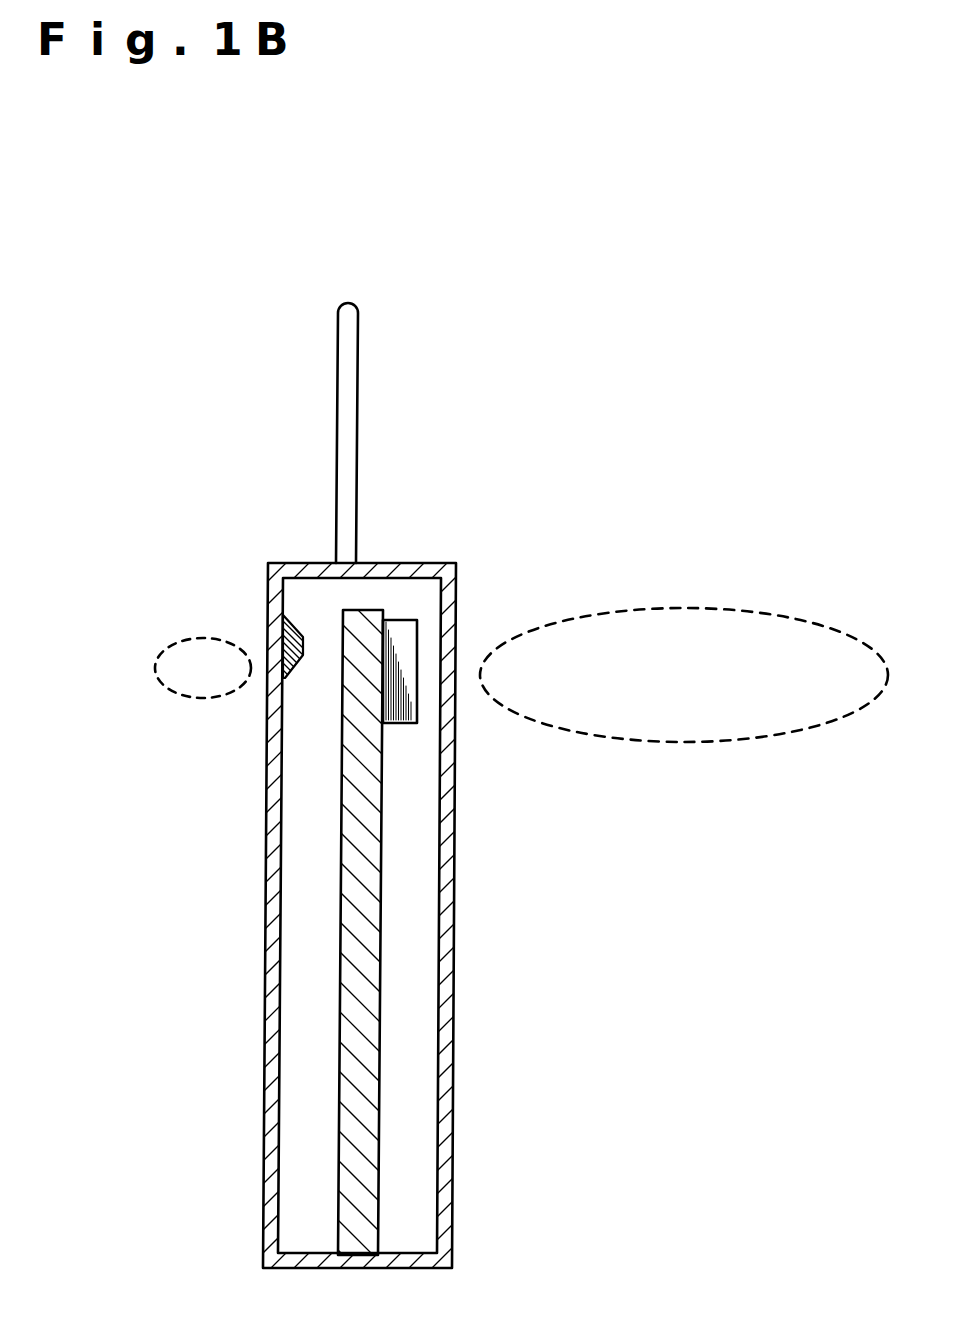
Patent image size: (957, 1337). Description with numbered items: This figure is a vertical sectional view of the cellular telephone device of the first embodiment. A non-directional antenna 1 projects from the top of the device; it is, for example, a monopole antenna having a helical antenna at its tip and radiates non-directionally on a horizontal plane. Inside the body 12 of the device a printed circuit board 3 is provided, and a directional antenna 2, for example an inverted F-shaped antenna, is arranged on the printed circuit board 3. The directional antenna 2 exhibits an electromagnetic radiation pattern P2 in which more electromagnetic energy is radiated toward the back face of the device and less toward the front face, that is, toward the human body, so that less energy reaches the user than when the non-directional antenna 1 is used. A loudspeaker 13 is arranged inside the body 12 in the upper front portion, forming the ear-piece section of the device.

The non-directional antenna 1 is at (357, 453).
The directional antenna 2 is at (400, 727).
The printed circuit board 3 is at (342, 777).
The body 12 is at (267, 797).
The loudspeaker 13 is at (292, 680).
The electromagnetic radiation pattern P2 is at (186, 641).